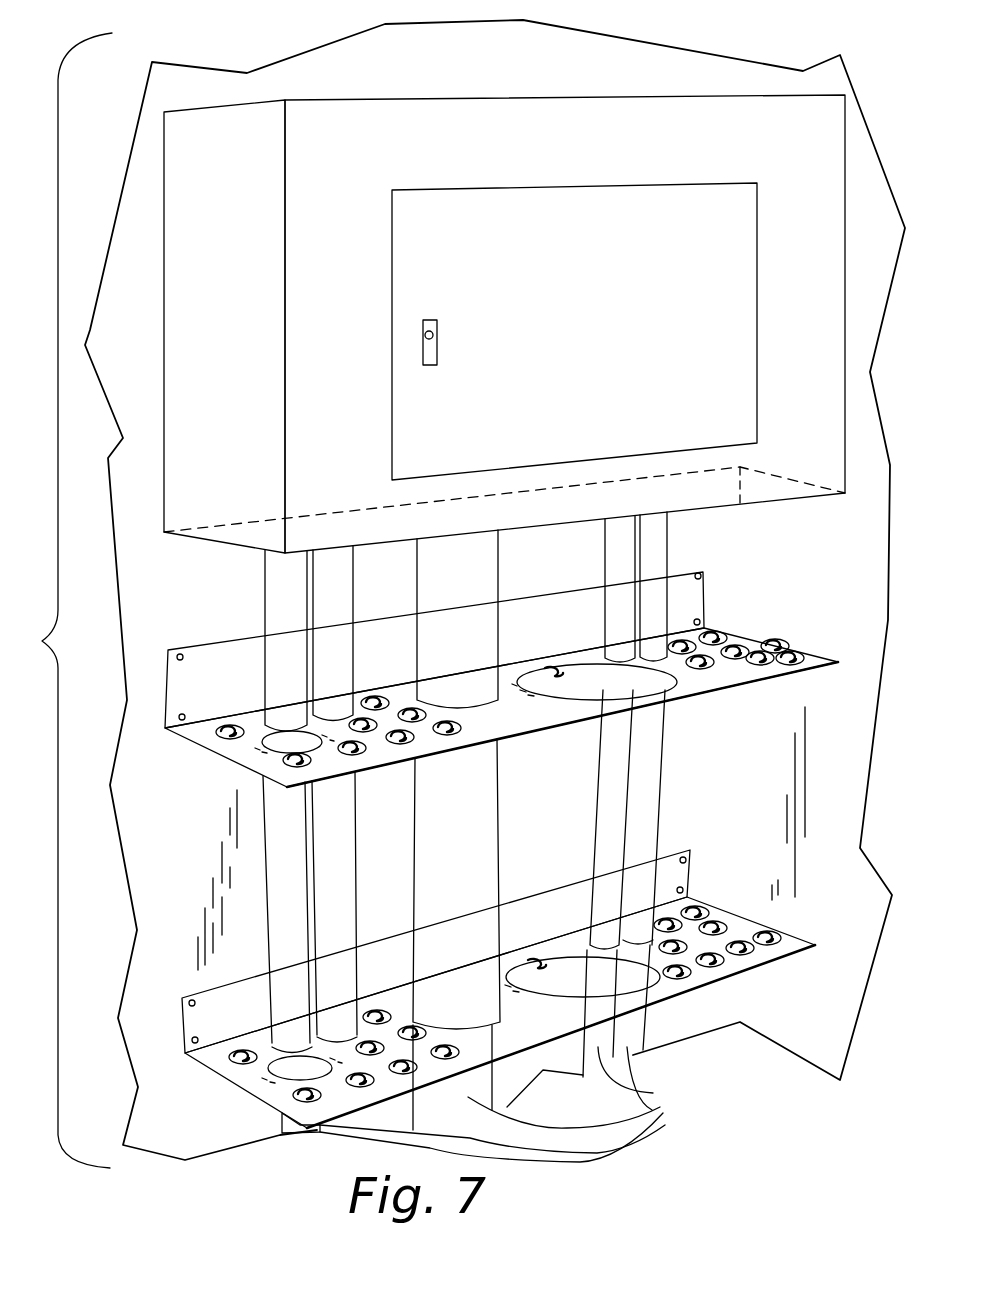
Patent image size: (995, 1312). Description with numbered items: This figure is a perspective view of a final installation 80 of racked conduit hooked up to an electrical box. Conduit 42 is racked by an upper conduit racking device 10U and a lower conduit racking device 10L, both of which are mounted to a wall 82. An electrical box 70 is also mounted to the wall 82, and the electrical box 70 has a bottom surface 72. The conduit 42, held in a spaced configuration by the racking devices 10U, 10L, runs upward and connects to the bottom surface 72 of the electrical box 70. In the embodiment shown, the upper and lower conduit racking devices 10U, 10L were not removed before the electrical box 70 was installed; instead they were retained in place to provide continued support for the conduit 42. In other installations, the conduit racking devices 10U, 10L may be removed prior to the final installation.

The wall 82 is at (168, 90).
The final installation 80 is at (63, 600).
The electrical box 70 is at (207, 327).
The bottom surface 72 is at (740, 505).
The upper conduit racking device 10U is at (220, 667).
The lower conduit racking device 10L is at (223, 1012).
The conduit 42 is at (504, 1104).